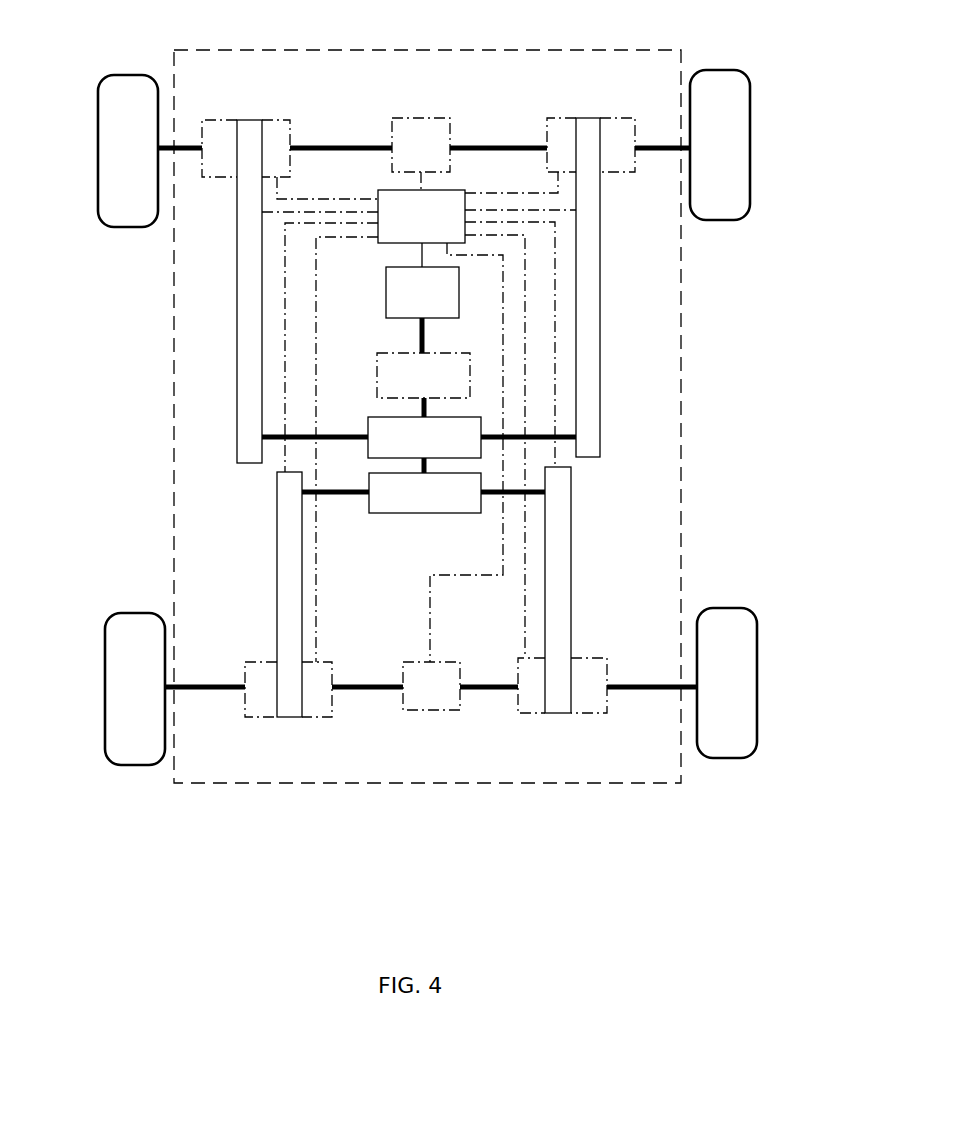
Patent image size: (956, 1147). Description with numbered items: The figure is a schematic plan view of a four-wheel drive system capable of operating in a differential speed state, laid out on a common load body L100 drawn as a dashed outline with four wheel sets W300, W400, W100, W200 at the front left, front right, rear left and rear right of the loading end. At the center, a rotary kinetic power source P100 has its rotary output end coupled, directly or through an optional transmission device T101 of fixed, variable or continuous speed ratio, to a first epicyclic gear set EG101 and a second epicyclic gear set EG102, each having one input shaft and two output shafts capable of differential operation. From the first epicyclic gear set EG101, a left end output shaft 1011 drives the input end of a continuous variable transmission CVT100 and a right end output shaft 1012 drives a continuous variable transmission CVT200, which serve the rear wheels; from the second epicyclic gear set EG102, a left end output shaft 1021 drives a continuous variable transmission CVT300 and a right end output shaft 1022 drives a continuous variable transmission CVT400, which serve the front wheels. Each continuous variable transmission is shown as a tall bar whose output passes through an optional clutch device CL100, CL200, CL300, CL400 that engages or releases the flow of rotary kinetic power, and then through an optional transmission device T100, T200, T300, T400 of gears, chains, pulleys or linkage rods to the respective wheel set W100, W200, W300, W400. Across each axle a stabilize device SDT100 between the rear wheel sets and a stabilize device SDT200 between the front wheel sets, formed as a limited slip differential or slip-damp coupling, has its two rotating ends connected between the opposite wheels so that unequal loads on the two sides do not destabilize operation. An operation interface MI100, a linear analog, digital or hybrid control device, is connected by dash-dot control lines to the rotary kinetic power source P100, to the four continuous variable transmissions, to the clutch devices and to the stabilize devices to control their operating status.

The common load body L100 is at (357, 48).
The wheel set W100 is at (103, 640).
The wheel set W200 is at (757, 635).
The wheel set W300 is at (98, 107).
The wheel set W400 is at (750, 103).
The transmission device T100 is at (253, 673).
The transmission device T200 is at (589, 668).
The transmission device T300 is at (218, 132).
The transmission device T400 is at (618, 130).
The transmission device T101 is at (423, 385).
The clutch device CL100 is at (323, 670).
The clutch device CL200 is at (527, 672).
The clutch device CL300 is at (272, 130).
The clutch device CL400 is at (555, 128).
The stabilize device SDT100 is at (428, 690).
The stabilize device SDT200 is at (425, 133).
The continuous variable transmission CVT100 is at (287, 573).
The continuous variable transmission CVT200 is at (560, 568).
The continuous variable transmission CVT300 is at (245, 378).
The continuous variable transmission CVT400 is at (598, 358).
The operation interface MI100 is at (371, 222).
The rotary kinetic power source P100 is at (422, 310).
The first epicyclic gear set EG101 is at (425, 493).
The second epicyclic gear set EG102 is at (424, 445).
The left end output shaft 1011 is at (337, 495).
The right end output shaft 1012 is at (497, 492).
The left end output shaft 1021 is at (340, 437).
The right end output shaft 1022 is at (492, 433).